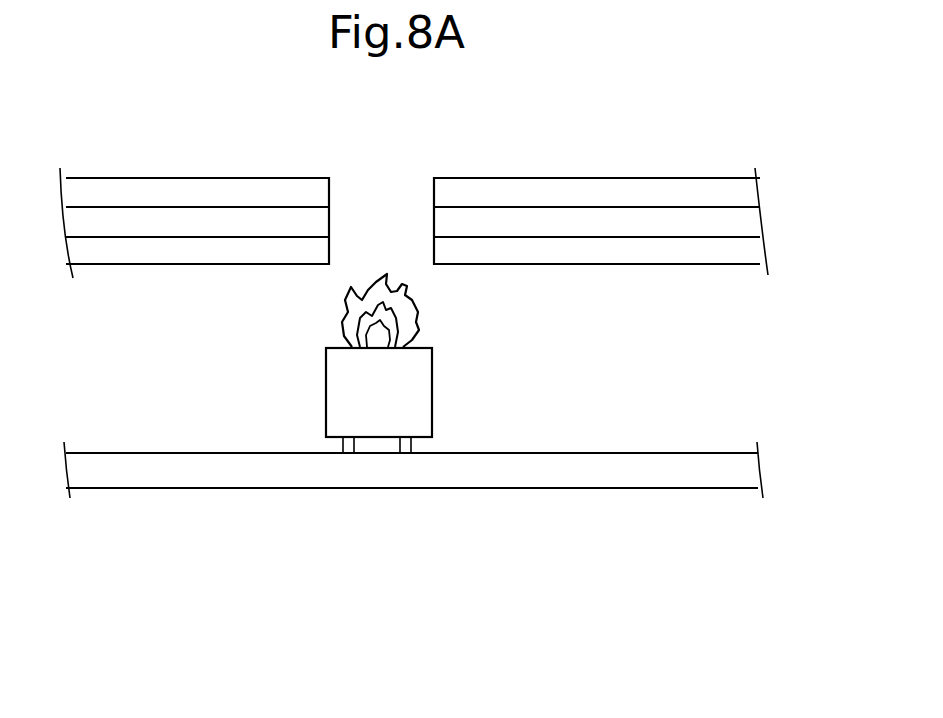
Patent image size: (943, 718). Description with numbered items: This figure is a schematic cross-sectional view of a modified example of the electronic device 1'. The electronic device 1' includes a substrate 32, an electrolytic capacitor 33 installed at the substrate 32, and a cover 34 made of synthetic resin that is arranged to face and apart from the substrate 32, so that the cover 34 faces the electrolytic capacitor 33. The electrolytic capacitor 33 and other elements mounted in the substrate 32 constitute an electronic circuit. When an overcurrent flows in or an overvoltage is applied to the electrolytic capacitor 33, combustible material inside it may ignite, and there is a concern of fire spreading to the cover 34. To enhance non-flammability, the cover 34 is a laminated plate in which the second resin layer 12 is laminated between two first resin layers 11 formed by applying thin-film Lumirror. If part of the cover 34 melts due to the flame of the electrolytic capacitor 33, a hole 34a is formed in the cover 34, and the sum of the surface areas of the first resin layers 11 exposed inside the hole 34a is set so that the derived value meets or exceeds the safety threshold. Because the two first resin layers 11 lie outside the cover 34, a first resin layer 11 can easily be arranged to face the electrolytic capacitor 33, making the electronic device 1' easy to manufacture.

The electronic device 1' is at (194, 189).
The first resin layer 11 is at (705, 197).
The second resin layer 12 is at (643, 220).
The substrate 32 is at (667, 452).
The electrolytic capacitor 33 is at (432, 396).
The cover 34 is at (583, 173).
The hole 34a is at (387, 252).